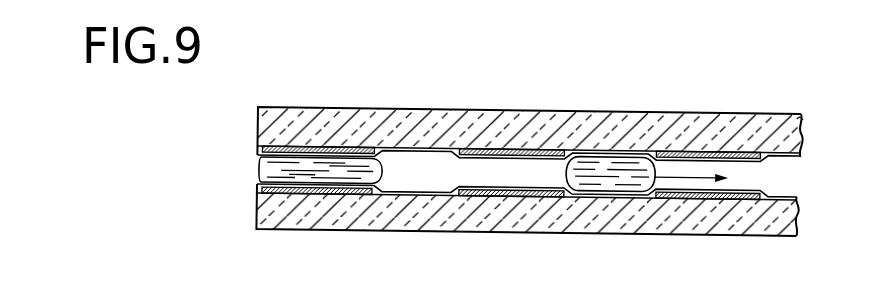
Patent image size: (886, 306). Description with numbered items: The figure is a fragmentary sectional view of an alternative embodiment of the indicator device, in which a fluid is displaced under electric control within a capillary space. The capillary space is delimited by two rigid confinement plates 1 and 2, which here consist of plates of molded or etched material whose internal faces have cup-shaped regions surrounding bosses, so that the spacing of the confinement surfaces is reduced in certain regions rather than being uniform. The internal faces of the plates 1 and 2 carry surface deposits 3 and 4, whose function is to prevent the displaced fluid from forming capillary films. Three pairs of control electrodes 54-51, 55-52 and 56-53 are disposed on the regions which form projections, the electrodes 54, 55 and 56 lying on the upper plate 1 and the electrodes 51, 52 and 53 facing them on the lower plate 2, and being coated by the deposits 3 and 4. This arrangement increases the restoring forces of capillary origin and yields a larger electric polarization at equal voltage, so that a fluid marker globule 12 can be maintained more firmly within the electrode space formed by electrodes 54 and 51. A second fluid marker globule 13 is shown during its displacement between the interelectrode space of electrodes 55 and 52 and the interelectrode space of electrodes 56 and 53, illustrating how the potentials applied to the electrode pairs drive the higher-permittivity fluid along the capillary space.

The confinement plate 1 is at (764, 124).
The confinement plate 2 is at (755, 228).
The surface deposit 3 is at (804, 166).
The surface deposit 4 is at (795, 195).
The fluid marker globule 12 is at (288, 168).
The fluid marker globule 13 is at (611, 175).
The control electrode 51 is at (345, 193).
The control electrode 52 is at (545, 195).
The control electrode 53 is at (703, 195).
The control electrode 54 is at (312, 148).
The control electrode 55 is at (508, 148).
The control electrode 56 is at (698, 150).